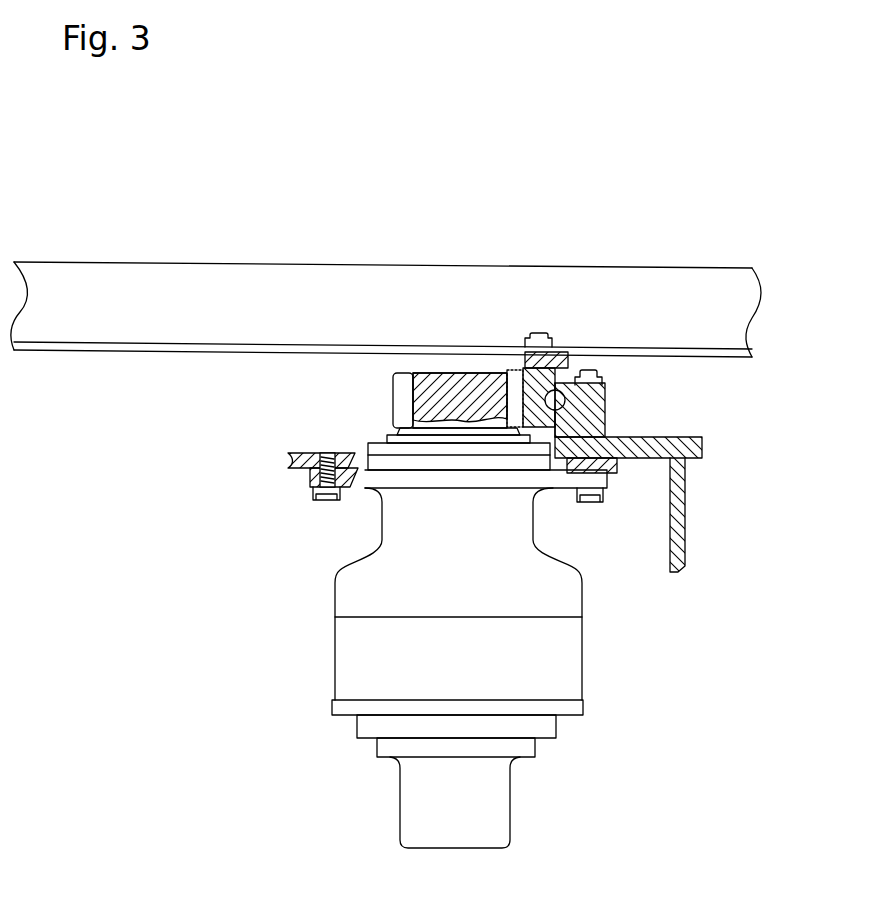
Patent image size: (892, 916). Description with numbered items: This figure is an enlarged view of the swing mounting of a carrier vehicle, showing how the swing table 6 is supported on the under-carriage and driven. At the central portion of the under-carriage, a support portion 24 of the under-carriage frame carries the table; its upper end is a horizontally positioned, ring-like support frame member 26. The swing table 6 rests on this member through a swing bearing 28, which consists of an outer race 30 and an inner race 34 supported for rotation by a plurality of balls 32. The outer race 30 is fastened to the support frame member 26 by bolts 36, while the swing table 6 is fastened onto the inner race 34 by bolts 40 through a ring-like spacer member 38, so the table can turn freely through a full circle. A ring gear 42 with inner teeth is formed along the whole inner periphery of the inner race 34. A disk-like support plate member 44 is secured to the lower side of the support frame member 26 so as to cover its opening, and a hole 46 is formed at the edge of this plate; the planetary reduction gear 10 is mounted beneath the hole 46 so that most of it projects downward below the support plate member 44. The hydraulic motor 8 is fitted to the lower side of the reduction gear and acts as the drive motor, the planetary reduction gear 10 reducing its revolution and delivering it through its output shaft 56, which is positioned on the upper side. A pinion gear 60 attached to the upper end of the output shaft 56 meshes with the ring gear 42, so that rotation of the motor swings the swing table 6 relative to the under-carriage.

The swing table 6 is at (285, 283).
The hydraulic motor 8 is at (410, 810).
The planetary reduction gear 10 is at (323, 650).
The support portion 24 is at (690, 541).
The support frame member 26 is at (672, 442).
The swing bearing 28 is at (624, 380).
The outer race 30 is at (597, 421).
The balls 32 is at (593, 402).
The inner race 34 is at (543, 373).
The bolts 36 is at (588, 370).
The spacer member 38 is at (527, 353).
The bolts 40 is at (535, 333).
The ring gear 42 is at (467, 380).
The support plate member 44 is at (617, 467).
The hole 46 is at (357, 457).
The output shaft 56 is at (423, 402).
The pinion gear 60 is at (398, 383).